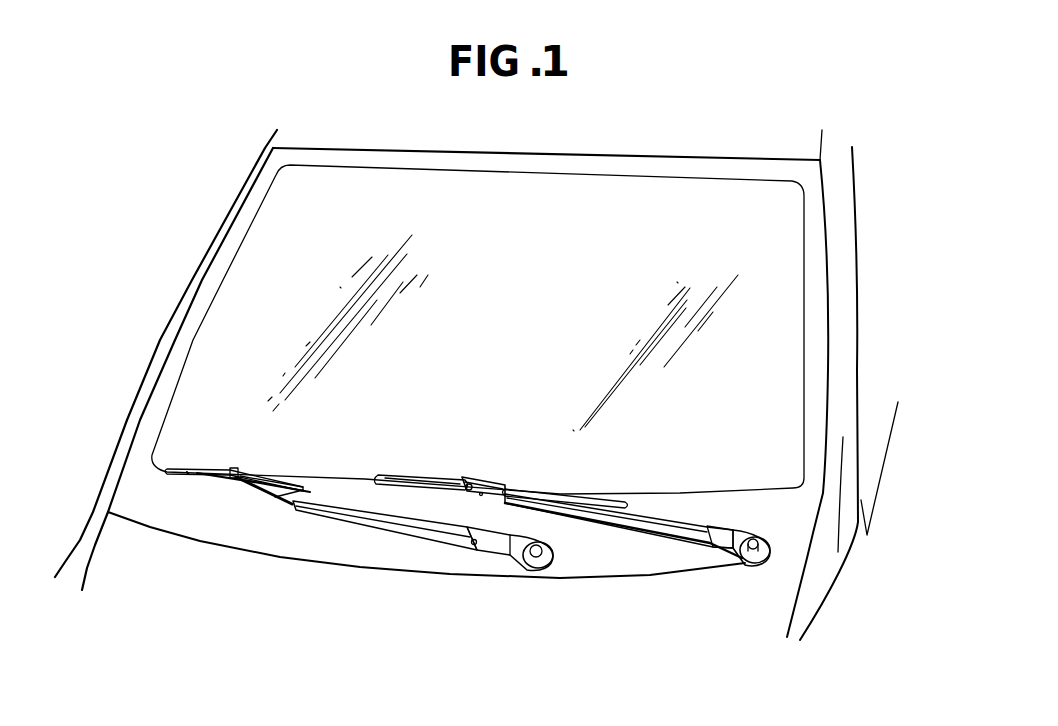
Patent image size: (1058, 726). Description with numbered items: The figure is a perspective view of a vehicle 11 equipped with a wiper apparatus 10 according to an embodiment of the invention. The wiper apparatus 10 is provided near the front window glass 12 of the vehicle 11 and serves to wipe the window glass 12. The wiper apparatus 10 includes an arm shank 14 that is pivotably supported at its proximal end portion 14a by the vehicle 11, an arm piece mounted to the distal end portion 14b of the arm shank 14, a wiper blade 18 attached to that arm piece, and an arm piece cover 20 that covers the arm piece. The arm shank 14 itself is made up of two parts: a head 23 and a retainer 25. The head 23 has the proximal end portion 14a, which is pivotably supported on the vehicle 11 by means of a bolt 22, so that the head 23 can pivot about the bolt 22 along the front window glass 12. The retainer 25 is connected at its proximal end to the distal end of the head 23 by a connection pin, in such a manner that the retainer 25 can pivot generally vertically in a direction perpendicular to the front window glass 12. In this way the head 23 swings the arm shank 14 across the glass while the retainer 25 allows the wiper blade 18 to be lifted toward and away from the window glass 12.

The wiper apparatus 10 is at (498, 467).
The vehicle 11 is at (216, 267).
The front window glass 12 is at (763, 322).
The arm shank 14 is at (782, 417).
The proximal end portion 14a is at (742, 560).
The distal end portion 14b is at (515, 496).
The wiper blade 18 is at (418, 477).
The arm piece cover 20 is at (497, 486).
The bolt 22 is at (763, 538).
The head 23 is at (730, 527).
The retainer 25 is at (652, 518).